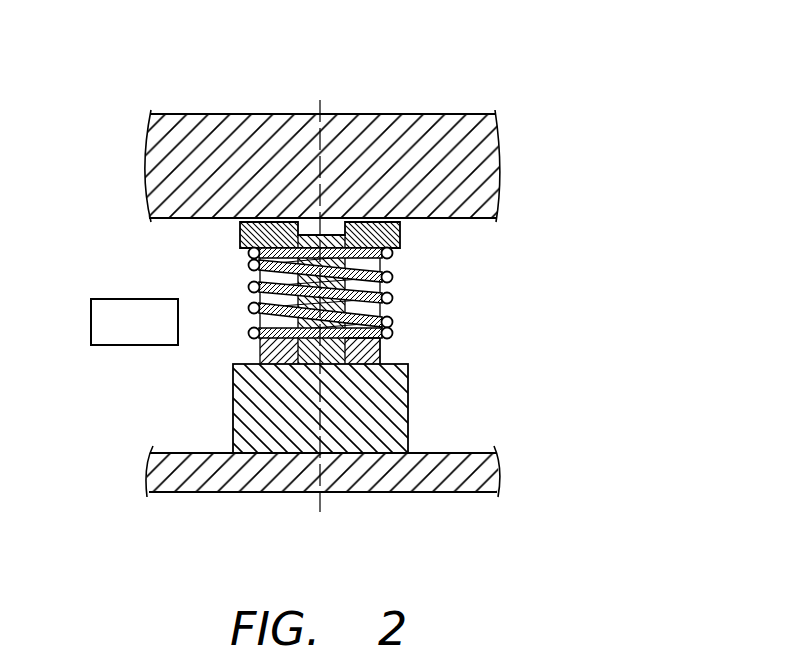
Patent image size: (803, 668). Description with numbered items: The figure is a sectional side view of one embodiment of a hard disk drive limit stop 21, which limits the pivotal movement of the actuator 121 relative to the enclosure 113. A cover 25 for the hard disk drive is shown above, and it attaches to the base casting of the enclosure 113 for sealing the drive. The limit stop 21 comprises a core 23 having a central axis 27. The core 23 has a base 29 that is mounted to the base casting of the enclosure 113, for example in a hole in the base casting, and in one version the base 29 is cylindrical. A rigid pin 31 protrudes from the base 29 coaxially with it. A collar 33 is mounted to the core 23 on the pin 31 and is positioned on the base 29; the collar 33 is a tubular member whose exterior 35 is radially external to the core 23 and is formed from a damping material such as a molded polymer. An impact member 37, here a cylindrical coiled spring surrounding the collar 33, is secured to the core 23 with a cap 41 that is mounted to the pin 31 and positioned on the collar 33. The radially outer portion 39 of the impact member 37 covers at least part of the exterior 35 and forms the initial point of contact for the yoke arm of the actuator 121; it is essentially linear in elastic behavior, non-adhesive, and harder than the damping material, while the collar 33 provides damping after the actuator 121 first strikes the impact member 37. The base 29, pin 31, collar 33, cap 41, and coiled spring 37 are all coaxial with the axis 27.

The limit stop 21 is at (596, 236).
The core 23 is at (510, 383).
The cover 25 is at (378, 130).
The central axis 27 is at (318, 505).
The base 29 is at (402, 436).
The rigid pin 31 is at (317, 258).
The collar 33 is at (352, 350).
The exterior 35 is at (246, 356).
The impact member 37 is at (392, 337).
The radially outer portion 39 is at (410, 318).
The cap 41 is at (401, 232).
The enclosure 113 is at (183, 478).
The actuator 121 is at (138, 298).